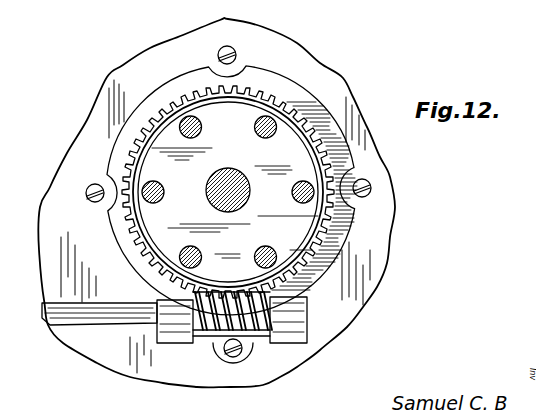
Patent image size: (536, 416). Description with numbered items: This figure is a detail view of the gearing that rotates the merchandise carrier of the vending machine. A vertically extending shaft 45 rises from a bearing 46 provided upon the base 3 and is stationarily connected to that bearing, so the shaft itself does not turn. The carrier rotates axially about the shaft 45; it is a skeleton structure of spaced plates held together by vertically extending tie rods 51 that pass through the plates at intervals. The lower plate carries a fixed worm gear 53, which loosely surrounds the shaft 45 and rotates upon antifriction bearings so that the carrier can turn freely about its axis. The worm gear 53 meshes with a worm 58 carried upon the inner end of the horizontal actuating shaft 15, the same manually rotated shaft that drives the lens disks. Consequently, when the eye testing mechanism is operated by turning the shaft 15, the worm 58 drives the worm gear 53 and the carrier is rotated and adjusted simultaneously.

The base 3 is at (377, 246).
The bearing 46 is at (167, 92).
The worm gear 53 is at (228, 192).
The tie rods 51 is at (253, 119).
The shaft 45 is at (232, 178).
The actuating shaft 15 is at (105, 312).
The worm 58 is at (207, 320).